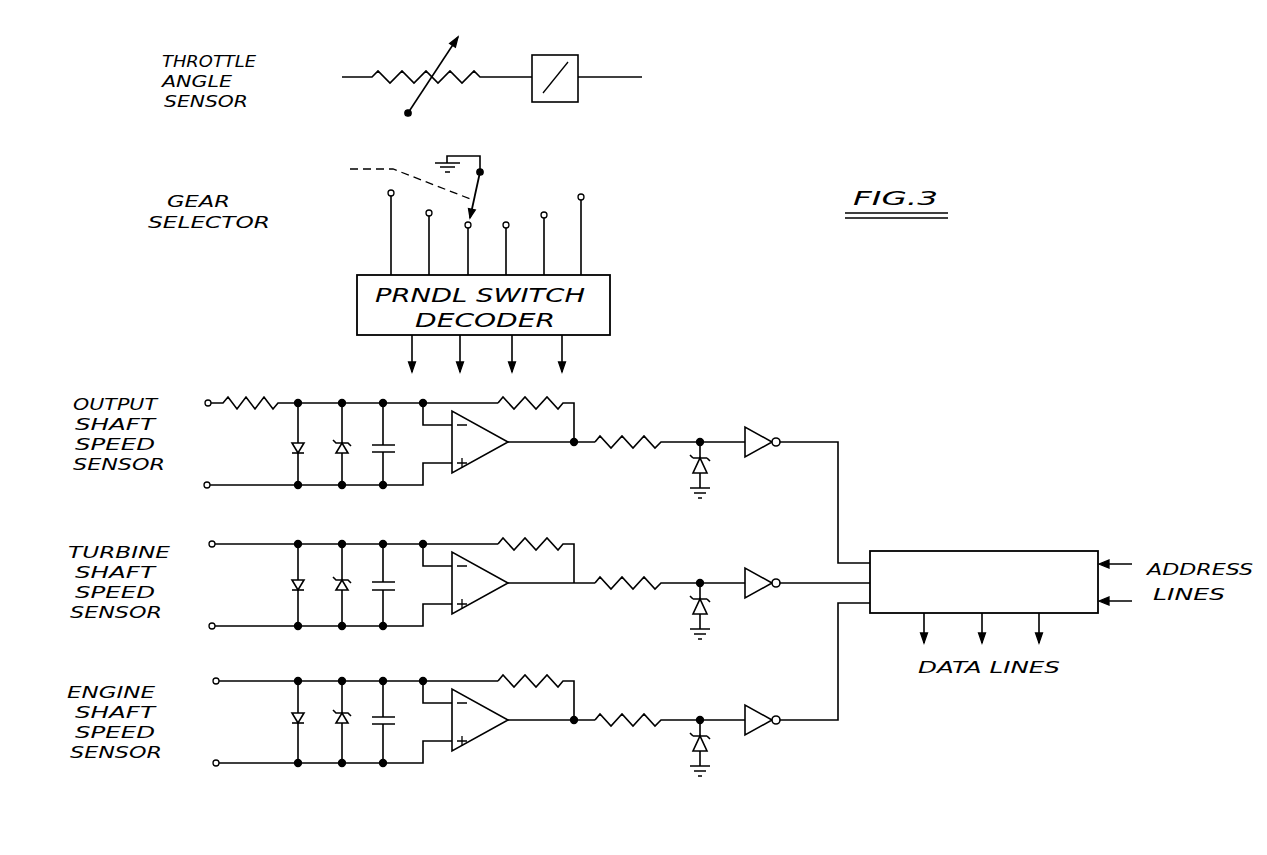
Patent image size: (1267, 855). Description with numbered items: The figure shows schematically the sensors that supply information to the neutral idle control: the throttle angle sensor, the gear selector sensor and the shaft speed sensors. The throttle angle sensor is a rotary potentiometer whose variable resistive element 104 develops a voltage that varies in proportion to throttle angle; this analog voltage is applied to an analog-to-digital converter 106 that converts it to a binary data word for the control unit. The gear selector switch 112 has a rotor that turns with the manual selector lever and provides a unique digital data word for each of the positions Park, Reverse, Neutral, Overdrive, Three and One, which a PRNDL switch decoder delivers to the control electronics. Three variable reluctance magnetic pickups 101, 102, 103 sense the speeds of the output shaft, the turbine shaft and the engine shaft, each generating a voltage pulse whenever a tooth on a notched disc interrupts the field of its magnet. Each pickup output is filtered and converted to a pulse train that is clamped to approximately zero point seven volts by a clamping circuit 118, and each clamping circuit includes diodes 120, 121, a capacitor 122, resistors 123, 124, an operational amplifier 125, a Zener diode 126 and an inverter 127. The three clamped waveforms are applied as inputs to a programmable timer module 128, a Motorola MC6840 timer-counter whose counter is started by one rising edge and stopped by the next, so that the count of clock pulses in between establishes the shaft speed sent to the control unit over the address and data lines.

The variable reluctance magnetic pickup 101 is at (222, 395).
The variable reluctance magnetic pickup 102 is at (228, 540).
The variable reluctance magnetic pickup 103 is at (228, 678).
The variable resistive element 104 is at (407, 70).
The analog-to-digital converter 106 is at (580, 68).
The gear selector switch 112 is at (505, 210).
The clamping circuit 118 is at (328, 397).
The diode 120 is at (296, 446).
The diode 121 is at (340, 449).
The capacitor 122 is at (380, 453).
The resistor 123 is at (545, 400).
The resistor 124 is at (633, 432).
The operational amplifier 125 is at (482, 458).
The Zener diode 126 is at (715, 470).
The inverter 127 is at (763, 430).
The programmable timer module 128 is at (987, 550).